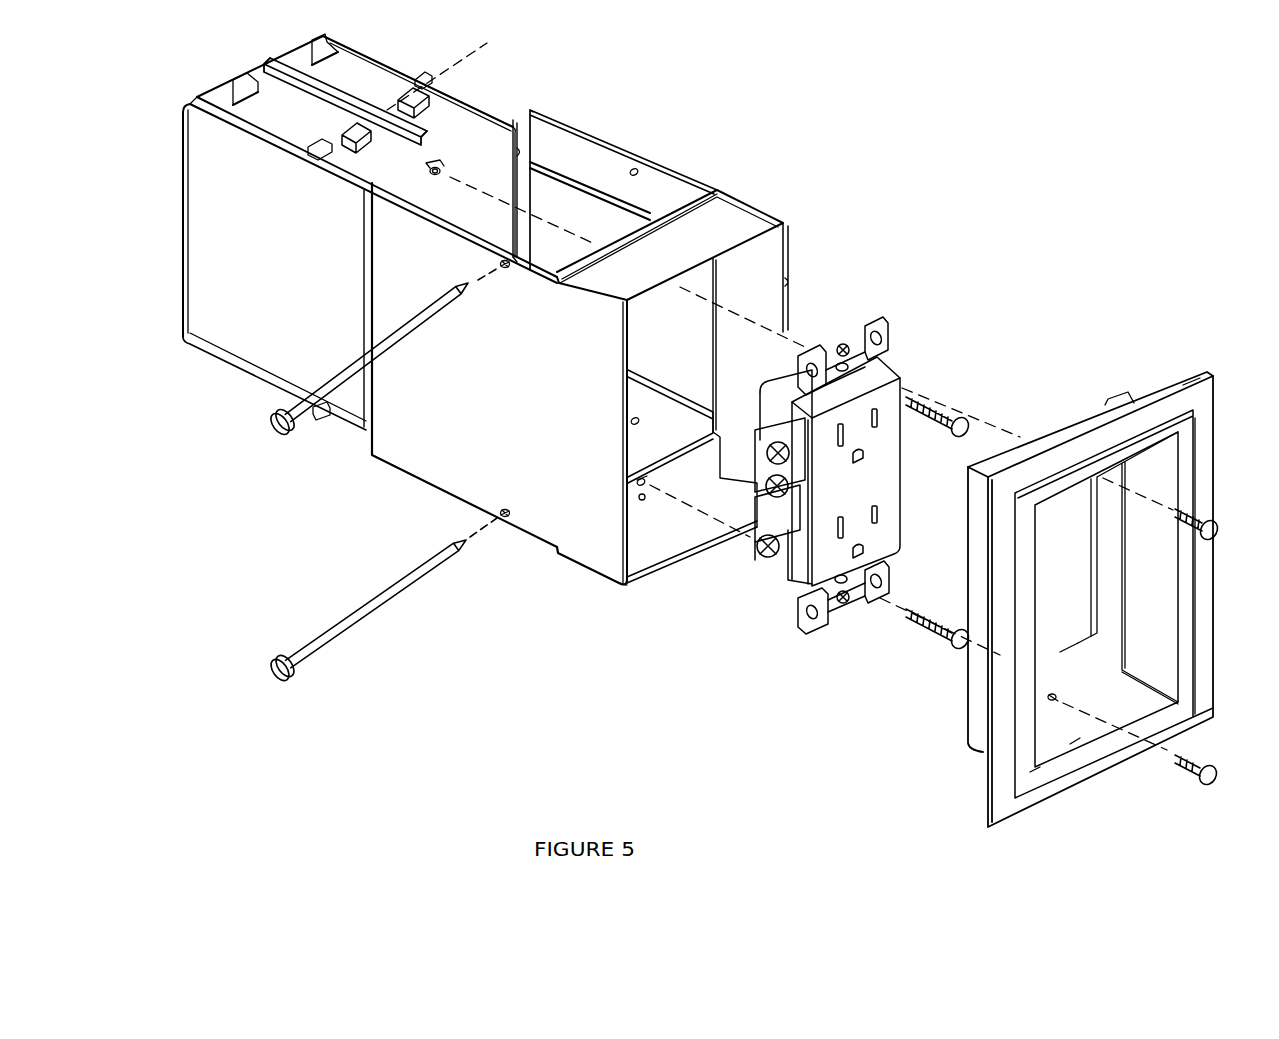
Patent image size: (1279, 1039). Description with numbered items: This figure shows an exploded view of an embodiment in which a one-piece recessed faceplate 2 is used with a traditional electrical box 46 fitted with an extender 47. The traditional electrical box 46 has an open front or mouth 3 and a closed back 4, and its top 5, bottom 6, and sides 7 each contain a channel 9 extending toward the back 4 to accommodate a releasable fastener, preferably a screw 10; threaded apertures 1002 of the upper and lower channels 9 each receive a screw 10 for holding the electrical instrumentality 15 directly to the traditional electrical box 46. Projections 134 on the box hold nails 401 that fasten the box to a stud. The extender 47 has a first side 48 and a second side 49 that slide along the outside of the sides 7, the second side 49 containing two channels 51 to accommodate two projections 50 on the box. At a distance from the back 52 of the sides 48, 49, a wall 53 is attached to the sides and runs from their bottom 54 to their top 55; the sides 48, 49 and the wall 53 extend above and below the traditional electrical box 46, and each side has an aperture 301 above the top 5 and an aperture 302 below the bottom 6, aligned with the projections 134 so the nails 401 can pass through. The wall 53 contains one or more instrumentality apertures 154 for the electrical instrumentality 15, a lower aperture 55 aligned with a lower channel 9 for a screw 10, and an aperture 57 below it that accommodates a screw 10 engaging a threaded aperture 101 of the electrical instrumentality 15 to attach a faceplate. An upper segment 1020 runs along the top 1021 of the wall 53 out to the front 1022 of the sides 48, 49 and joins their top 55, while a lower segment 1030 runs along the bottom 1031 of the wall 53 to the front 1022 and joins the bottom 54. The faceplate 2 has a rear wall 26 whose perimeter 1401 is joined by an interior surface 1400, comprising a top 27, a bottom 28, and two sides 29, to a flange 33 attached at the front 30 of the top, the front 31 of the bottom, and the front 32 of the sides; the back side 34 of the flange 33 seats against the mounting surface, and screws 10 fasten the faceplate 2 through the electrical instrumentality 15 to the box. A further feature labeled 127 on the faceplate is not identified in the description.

The one-piece recessed faceplate 2 is at (1130, 325).
The open front or mouth 3 is at (417, 187).
The closed back 4 is at (247, 70).
The top of rear portion of box 5 is at (354, 61).
The bottom of rear portion of box 6 is at (222, 360).
The sides of rear portion of box 7 is at (203, 308).
The channel 9 is at (257, 67).
The releasable fastener (screw) 10 is at (931, 606).
The electrical instrumentality 15 is at (798, 570).
The rear wall of faceplate 26 is at (1113, 555).
The top of interior surface 27 is at (1075, 418).
The bottom of interior surface 28 is at (1077, 733).
The sides of interior surface 29 is at (1165, 472).
The front of the top 30 is at (1190, 443).
The front of the bottom 31 is at (1040, 767).
The front of the two sides 32 is at (1177, 647).
The flange 33 is at (1175, 403).
The back side of flange 34 is at (1180, 378).
The traditional electrical box 46 is at (172, 460).
The extender 47 is at (485, 670).
The first side of extender 48 is at (420, 457).
The second side of extender 49 is at (606, 158).
The projections on box side 50 is at (525, 140).
The channels in second side 51 is at (640, 213).
The back of extender sides 52 is at (512, 122).
The wall of extender 53 is at (622, 302).
The bottom of extender sides 54 is at (447, 495).
The top of extender sides / lower aperture 55 is at (625, 152).
The aperture below lower aperture 57 is at (641, 517).
The threaded aperture of electrical instrumentality 101 is at (846, 341).
The inner wall of faceplate 127 is at (1078, 592).
The projections 134 is at (405, 93).
The instrumentality apertures in wall 154 is at (637, 400).
The upper aperture in extender side 301 is at (637, 170).
The lower aperture in extender side 302 is at (507, 517).
The nails 401 is at (278, 432).
The threaded apertures of channels 1002 is at (440, 177).
The upper segment 1020 is at (747, 220).
The top of wall 1021 is at (682, 206).
The front of extender sides 1022 is at (783, 242).
The lower segment 1030 is at (627, 589).
The bottom of wall 1031 is at (660, 508).
The interior surface of faceplate 1400 is at (1112, 398).
The perimeter of rear wall 1401 is at (1122, 620).